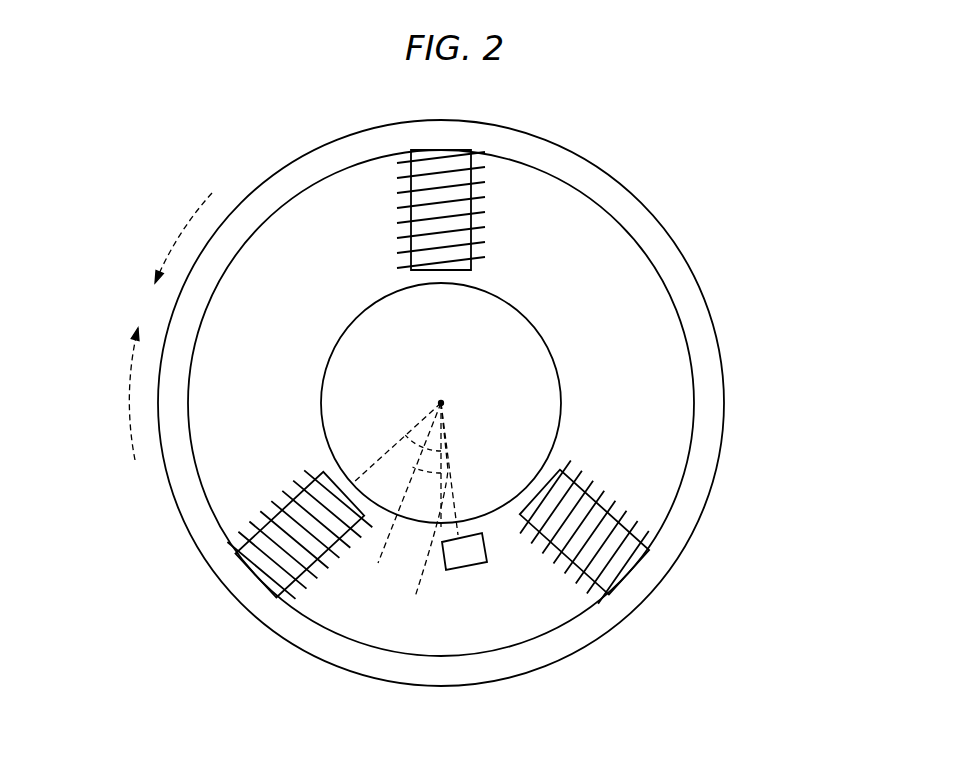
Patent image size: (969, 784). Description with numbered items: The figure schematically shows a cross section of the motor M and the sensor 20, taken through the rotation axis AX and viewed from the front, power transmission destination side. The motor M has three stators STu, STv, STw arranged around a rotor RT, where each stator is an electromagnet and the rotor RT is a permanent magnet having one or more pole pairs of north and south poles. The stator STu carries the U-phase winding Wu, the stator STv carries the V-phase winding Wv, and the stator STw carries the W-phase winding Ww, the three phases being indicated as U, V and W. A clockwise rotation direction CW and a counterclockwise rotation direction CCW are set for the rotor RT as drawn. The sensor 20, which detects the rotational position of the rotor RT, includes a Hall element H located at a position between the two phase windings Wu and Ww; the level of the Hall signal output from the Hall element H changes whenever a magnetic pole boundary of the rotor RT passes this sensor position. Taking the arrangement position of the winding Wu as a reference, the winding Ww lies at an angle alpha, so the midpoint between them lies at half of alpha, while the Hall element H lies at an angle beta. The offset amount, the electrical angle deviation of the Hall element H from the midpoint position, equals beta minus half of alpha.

The motor M is at (870, 232).
The rotor RT is at (510, 332).
The rotation axis AX is at (449, 375).
The stator STv is at (627, 211).
The stator STu is at (541, 533).
The stator STw is at (690, 466).
The V-phase winding Wv is at (471, 256).
The U-phase winding Wu is at (320, 478).
The W-phase winding Ww is at (565, 468).
The Hall element H is at (467, 557).
The sensor 20 is at (477, 600).
The U phase U is at (324, 518).
The V phase V is at (446, 309).
The W phase W is at (665, 610).
The rotation direction CW is at (180, 233).
The rotation direction CCW is at (132, 397).